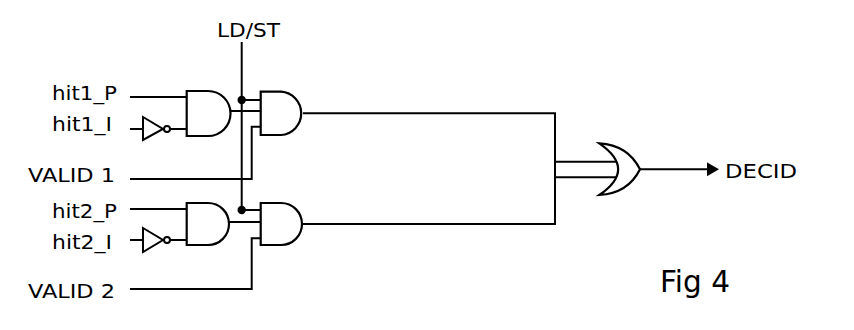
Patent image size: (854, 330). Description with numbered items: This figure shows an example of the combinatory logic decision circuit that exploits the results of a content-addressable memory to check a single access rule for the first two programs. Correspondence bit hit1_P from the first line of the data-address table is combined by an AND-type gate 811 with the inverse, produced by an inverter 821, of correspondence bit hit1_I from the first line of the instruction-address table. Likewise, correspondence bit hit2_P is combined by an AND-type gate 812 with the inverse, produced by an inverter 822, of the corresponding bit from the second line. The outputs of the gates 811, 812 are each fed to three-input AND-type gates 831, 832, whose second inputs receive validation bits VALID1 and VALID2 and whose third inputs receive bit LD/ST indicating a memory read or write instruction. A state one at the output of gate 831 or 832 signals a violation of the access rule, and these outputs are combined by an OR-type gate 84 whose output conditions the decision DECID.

The AND-type gate 811 is at (208, 91).
The AND-type gate 812 is at (202, 236).
The inverter 821 is at (152, 139).
The inverter 822 is at (152, 251).
The AND-type gate 831 is at (273, 92).
The AND-type gate 832 is at (280, 210).
The OR-type gate 84 is at (620, 148).